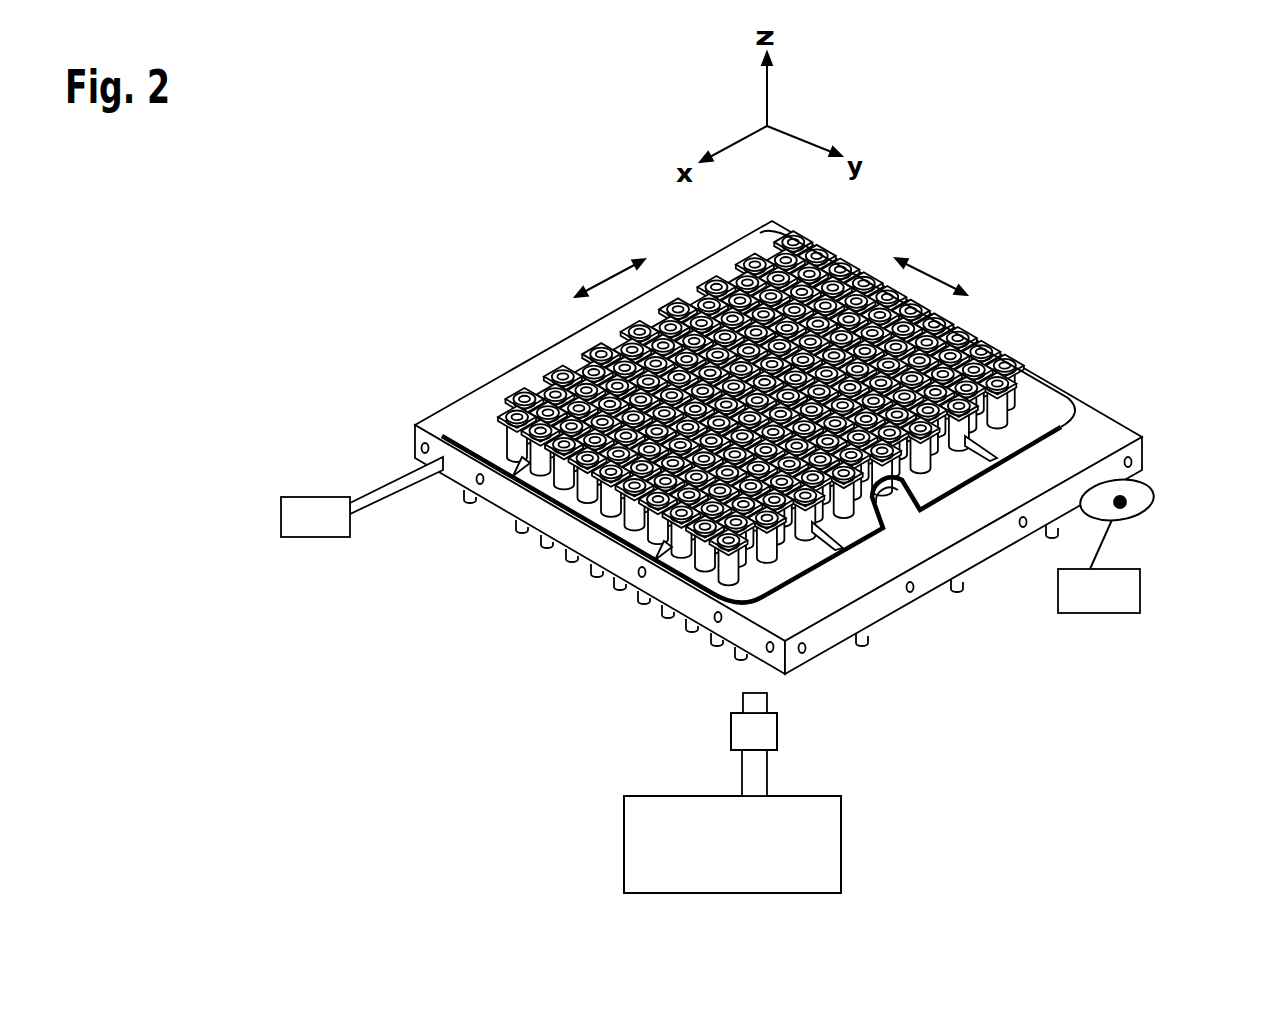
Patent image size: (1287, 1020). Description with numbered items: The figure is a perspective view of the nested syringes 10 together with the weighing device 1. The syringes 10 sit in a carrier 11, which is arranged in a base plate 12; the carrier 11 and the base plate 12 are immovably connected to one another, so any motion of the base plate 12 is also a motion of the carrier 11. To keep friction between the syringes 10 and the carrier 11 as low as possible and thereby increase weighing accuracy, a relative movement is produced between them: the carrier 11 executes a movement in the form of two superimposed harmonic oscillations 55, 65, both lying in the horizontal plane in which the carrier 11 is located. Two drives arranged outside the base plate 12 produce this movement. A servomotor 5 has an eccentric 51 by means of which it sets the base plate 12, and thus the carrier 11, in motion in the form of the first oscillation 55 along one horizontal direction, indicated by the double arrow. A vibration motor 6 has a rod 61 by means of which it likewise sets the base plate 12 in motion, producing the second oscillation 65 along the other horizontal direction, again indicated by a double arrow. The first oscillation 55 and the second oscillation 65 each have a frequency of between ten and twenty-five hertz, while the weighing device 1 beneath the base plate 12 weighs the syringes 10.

The weighing device 1 is at (798, 731).
The servomotor 5 is at (1178, 549).
The eccentric 51 is at (1152, 497).
The vibration motor 6 is at (268, 556).
The rod 61 is at (377, 485).
The syringe 10 is at (626, 532).
The carrier 11 is at (1045, 402).
The base plate 12 is at (1102, 437).
The first oscillation 55 is at (932, 272).
The second oscillation 65 is at (607, 276).